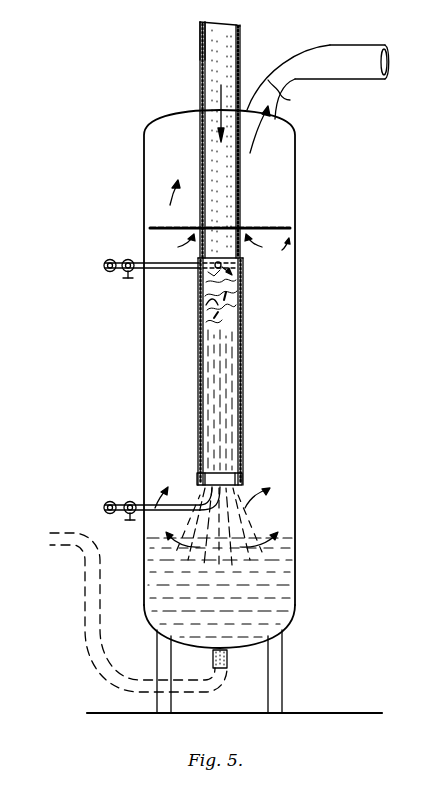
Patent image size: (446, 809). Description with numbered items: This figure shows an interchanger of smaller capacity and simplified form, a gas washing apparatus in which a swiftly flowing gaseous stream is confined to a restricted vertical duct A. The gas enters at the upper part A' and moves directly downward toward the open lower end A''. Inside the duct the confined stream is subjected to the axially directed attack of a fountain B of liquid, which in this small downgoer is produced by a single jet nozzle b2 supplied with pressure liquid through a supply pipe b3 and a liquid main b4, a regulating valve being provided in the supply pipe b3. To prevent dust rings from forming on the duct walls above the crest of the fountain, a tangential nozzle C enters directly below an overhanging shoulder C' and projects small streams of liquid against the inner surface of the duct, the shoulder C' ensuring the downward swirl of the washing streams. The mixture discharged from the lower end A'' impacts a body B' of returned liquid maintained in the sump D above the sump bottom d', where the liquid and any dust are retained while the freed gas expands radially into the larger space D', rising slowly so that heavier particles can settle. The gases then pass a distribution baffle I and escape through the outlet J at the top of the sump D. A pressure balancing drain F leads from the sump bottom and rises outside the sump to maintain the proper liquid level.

The upper part of duct A' is at (189, 47).
The duct A is at (265, 171).
The lower end of duct A'' is at (237, 470).
The outlet J is at (328, 60).
The distribution baffle I is at (272, 230).
The tangential nozzle C is at (168, 278).
The overhanging shoulder C' is at (246, 275).
The jet nozzle b2 is at (247, 497).
The space D' is at (267, 341).
The fountain B is at (238, 371).
The sump D is at (237, 411).
The supply pipe b3 is at (160, 500).
The liquid main b4 is at (116, 504).
The body of returned liquid B' is at (246, 562).
The sump bottom d' is at (193, 612).
The drain F is at (228, 659).